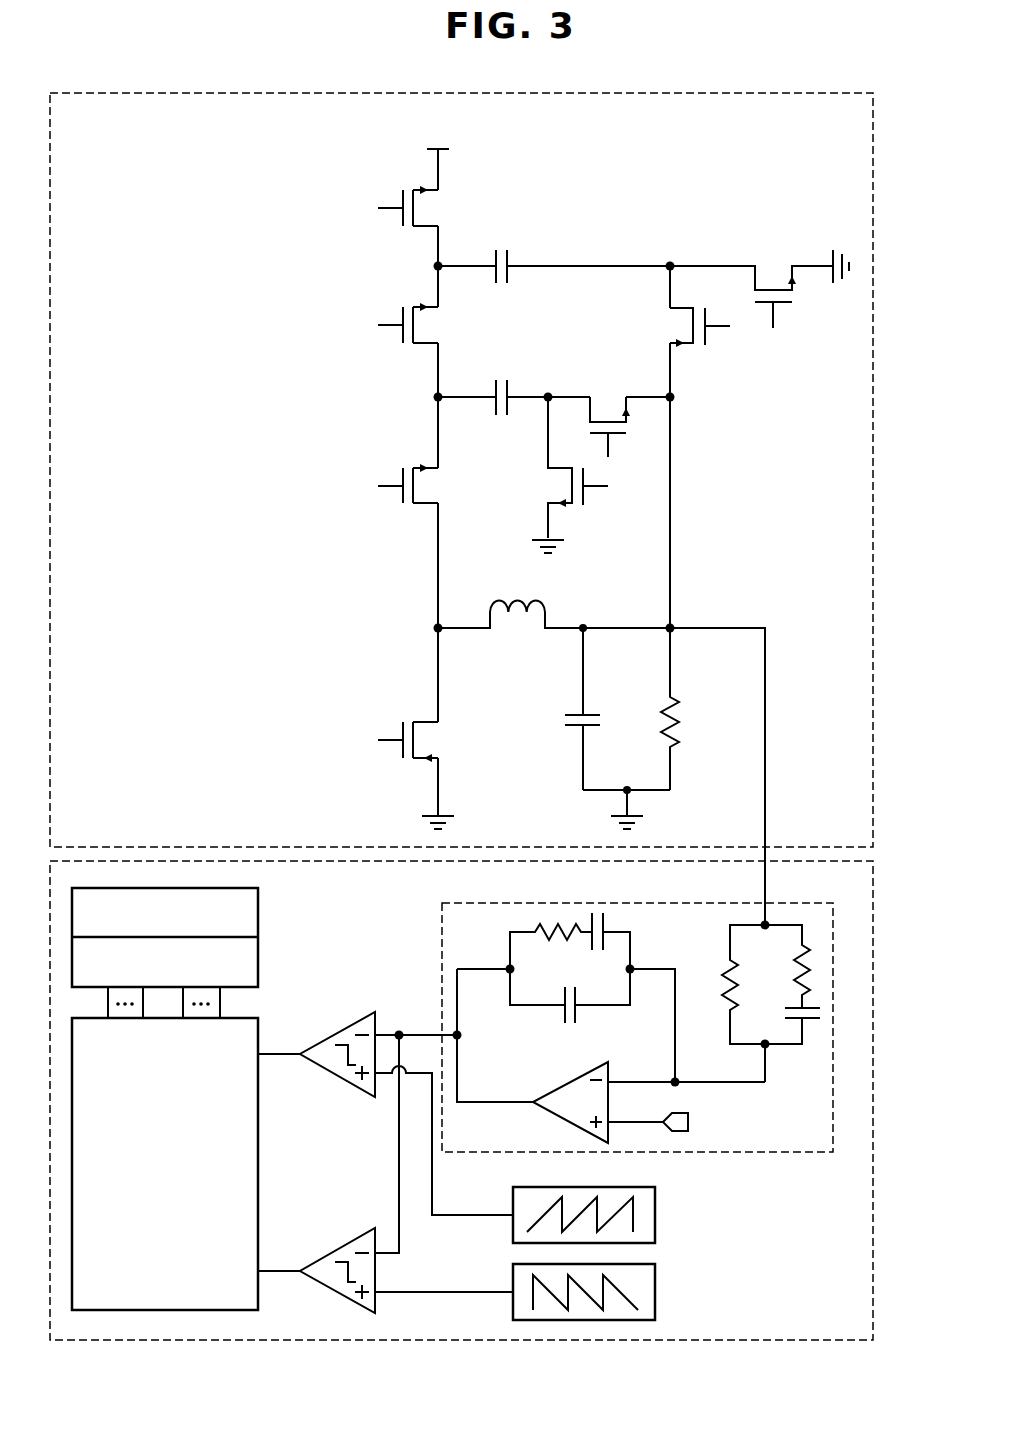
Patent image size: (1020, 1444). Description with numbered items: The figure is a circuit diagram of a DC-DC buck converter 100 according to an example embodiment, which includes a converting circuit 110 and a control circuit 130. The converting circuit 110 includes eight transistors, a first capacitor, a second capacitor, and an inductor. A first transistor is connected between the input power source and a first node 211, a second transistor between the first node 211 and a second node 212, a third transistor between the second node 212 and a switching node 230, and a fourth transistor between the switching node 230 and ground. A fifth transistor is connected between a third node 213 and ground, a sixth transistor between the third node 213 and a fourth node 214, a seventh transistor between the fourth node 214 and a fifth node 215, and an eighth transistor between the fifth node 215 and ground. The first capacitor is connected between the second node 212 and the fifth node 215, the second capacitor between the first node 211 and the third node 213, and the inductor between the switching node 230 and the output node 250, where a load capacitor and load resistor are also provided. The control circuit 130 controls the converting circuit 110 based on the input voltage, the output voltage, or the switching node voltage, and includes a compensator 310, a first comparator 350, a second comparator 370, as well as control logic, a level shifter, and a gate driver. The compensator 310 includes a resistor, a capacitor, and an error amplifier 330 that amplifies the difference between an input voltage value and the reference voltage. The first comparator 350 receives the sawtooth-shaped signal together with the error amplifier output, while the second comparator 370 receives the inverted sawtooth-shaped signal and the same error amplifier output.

The DC-DC buck converter 100 is at (852, 69).
The converting circuit 110 is at (875, 457).
The control circuit 130 is at (875, 1105).
The first node 211 is at (436, 266).
The second node 212 is at (436, 397).
The third node 213 is at (670, 264).
The fourth node 214 is at (674, 398).
The fifth node 215 is at (548, 394).
The switching node 230 is at (436, 628).
The output node 250 is at (672, 626).
The compensator 310 is at (637, 901).
The error amplifier 330 is at (561, 1117).
The first comparator 350 is at (337, 1030).
The second comparator 370 is at (337, 1247).